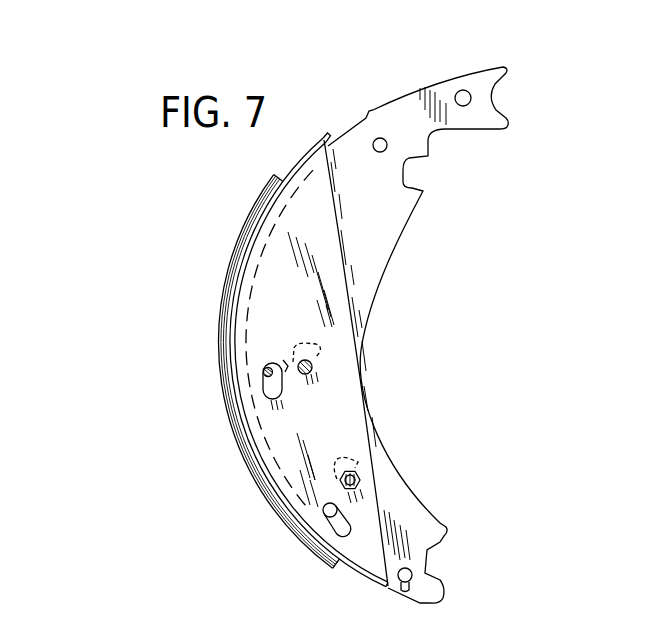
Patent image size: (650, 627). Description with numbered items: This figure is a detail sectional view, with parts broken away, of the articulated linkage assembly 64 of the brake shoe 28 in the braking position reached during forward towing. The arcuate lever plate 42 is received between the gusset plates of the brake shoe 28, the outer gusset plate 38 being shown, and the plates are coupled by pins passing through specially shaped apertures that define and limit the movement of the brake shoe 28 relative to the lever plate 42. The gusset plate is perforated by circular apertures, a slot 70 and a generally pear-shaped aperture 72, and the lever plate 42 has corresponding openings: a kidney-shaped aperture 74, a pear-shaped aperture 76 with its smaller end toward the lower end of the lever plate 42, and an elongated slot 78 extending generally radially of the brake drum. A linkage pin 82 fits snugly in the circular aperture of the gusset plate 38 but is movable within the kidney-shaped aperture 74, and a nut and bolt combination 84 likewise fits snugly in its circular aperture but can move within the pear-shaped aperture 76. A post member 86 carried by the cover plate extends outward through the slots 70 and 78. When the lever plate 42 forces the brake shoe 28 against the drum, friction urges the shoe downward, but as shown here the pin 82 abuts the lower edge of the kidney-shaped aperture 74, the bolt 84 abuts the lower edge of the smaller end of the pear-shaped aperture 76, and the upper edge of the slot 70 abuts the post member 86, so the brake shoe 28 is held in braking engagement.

The brake shoe 28 is at (240, 214).
The outer gusset plate 38 is at (315, 163).
The lever plate 42 is at (398, 122).
The articulated linkage assembly 64 is at (190, 353).
The slot 70 is at (271, 390).
The pear-shaped aperture 72 is at (338, 536).
The kidney-shaped aperture 74 is at (314, 352).
The pear-shaped aperture 76 is at (340, 461).
The slot 78 is at (282, 366).
The linkage pin 82 is at (313, 368).
The nut and bolt combination 84 is at (361, 480).
The post member 86 is at (264, 373).